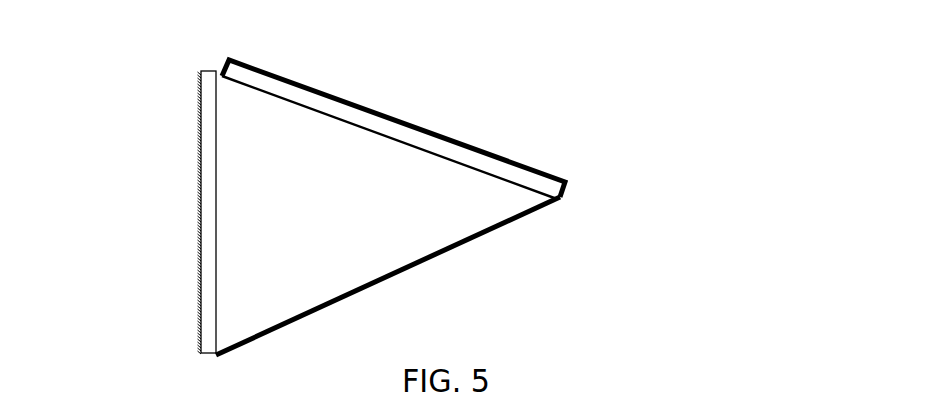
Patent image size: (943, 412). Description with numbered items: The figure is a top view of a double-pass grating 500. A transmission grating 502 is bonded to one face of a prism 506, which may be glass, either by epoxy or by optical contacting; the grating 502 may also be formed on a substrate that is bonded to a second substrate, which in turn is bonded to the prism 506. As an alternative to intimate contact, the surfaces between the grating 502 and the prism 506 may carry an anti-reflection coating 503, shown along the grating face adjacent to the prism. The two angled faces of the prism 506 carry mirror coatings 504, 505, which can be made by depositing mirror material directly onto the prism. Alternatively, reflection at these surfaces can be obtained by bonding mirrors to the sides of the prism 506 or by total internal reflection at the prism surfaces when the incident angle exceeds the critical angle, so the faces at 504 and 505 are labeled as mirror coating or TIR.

The double-pass grating 500 is at (70, 32).
The transmission grating 502 is at (174, 88).
The anti-reflection coating 503 is at (200, 334).
The mirror coating 504 is at (448, 121).
The mirror coating 505 is at (487, 249).
The prism 506 is at (320, 200).